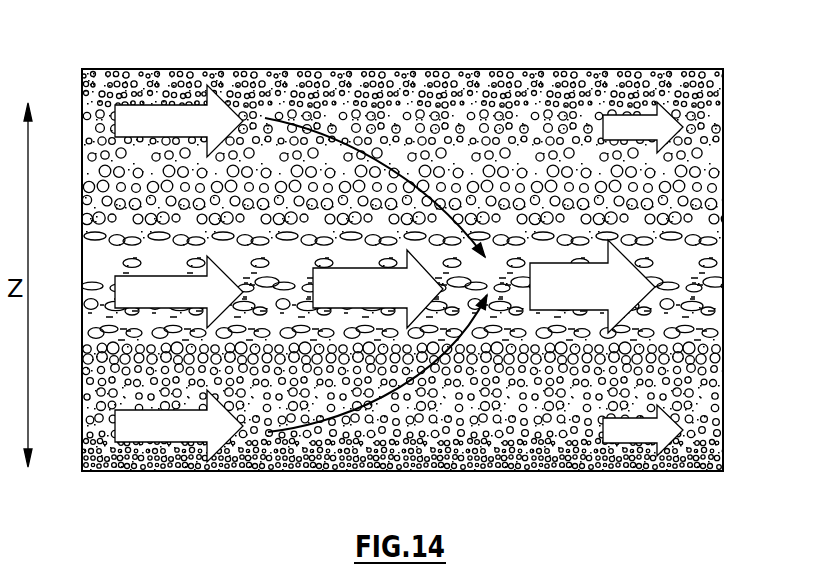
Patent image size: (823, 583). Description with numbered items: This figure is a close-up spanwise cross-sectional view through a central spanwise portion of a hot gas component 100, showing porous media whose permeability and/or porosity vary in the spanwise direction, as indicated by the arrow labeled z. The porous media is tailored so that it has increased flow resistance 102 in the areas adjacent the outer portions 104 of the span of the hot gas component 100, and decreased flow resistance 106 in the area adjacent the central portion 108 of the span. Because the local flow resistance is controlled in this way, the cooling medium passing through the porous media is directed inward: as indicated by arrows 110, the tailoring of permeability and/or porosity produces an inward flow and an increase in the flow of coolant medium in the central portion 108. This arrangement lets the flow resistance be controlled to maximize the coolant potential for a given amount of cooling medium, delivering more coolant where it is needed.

The hot gas component 100 is at (803, 23).
The increased flow resistance 102 is at (500, 113).
The outer portions 104 is at (300, 102).
The decreased flow resistance 106 is at (268, 284).
The central portion 108 is at (630, 260).
The arrows 110 is at (333, 300).